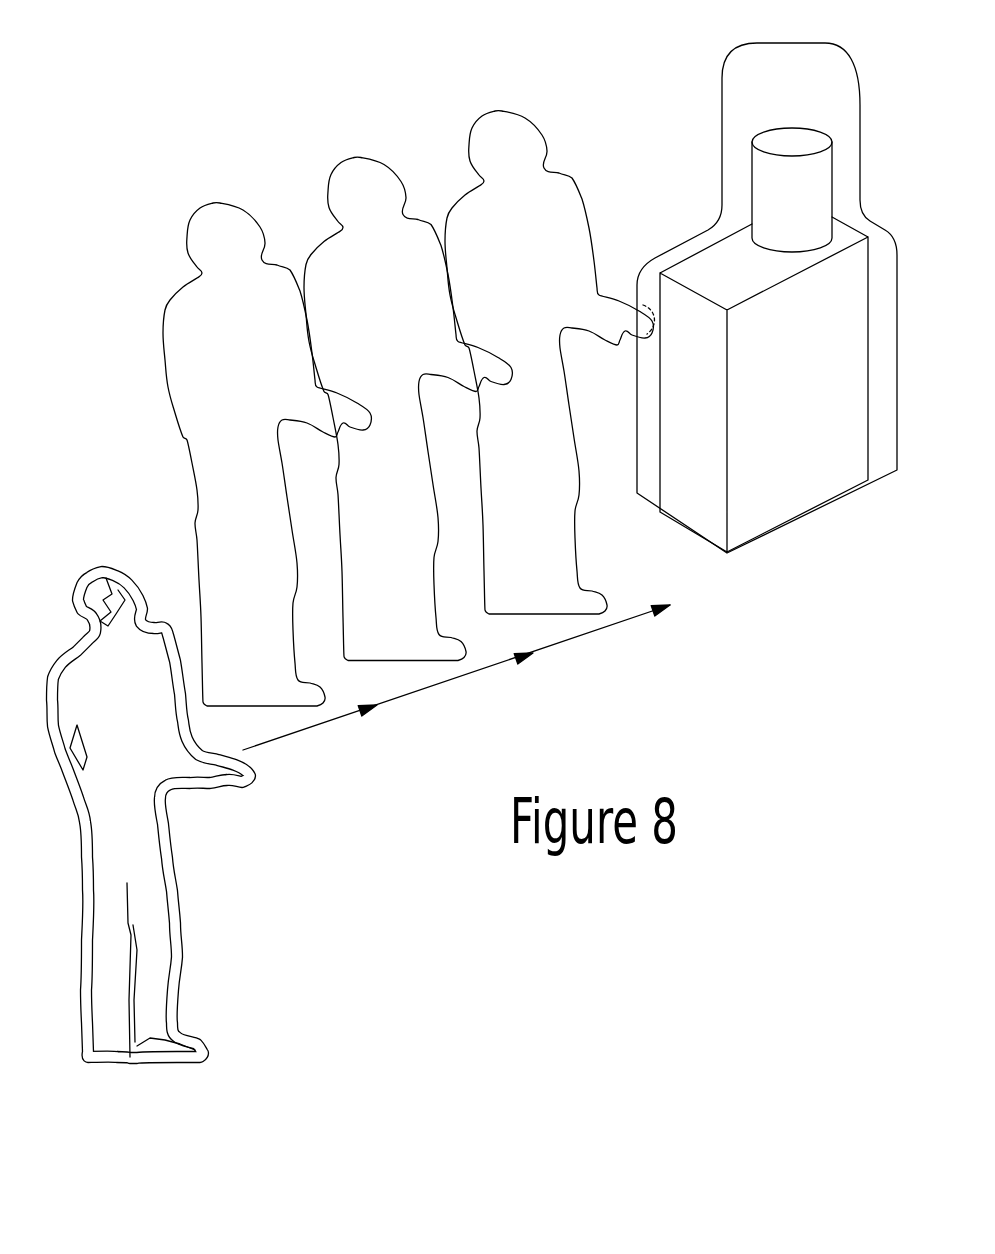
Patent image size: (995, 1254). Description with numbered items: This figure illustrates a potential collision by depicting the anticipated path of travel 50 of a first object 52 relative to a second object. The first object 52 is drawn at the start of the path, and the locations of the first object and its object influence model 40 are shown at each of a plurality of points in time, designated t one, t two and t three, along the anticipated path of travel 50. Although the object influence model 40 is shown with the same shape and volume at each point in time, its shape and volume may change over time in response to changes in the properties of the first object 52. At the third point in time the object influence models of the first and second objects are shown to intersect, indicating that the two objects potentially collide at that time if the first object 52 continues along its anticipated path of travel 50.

The object influence model 40 is at (102, 560).
The anticipated path of travel 50 is at (520, 695).
The first object 52 is at (110, 806).